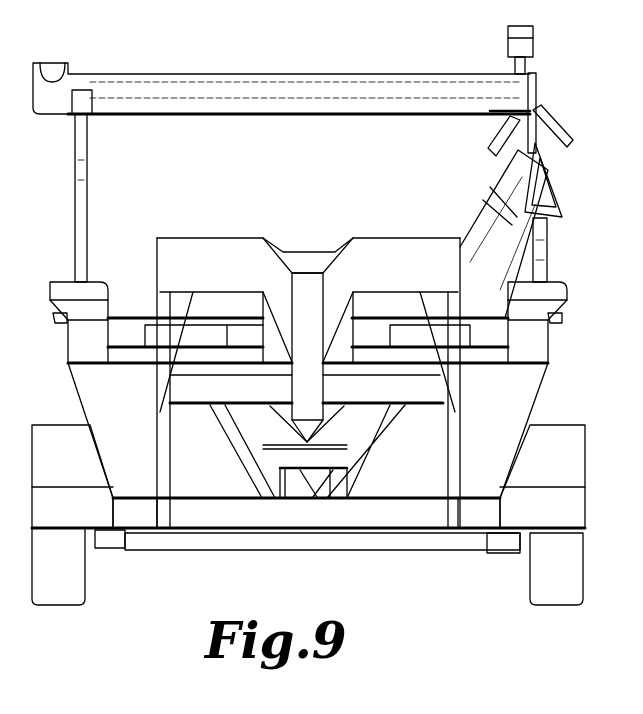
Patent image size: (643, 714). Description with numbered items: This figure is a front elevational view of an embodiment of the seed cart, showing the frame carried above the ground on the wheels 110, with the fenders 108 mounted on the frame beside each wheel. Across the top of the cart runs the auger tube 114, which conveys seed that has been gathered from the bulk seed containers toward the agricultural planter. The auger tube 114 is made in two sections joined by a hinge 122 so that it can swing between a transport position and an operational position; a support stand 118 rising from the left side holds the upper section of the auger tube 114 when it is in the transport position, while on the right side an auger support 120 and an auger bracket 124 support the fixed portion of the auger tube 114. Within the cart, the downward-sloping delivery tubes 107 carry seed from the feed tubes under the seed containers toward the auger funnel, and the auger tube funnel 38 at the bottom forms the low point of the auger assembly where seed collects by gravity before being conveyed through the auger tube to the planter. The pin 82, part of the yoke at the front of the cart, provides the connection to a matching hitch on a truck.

The auger tube 114 is at (263, 73).
The support stand 118 is at (87, 202).
The auger support 120 is at (548, 243).
The hinge 122 is at (540, 108).
The auger bracket 124 is at (556, 146).
The fenders 108 is at (44, 425).
The wheels 110 is at (85, 580).
The pin 82 is at (305, 385).
The delivery tubes 107 is at (238, 455).
The auger tube funnel 38 is at (310, 478).